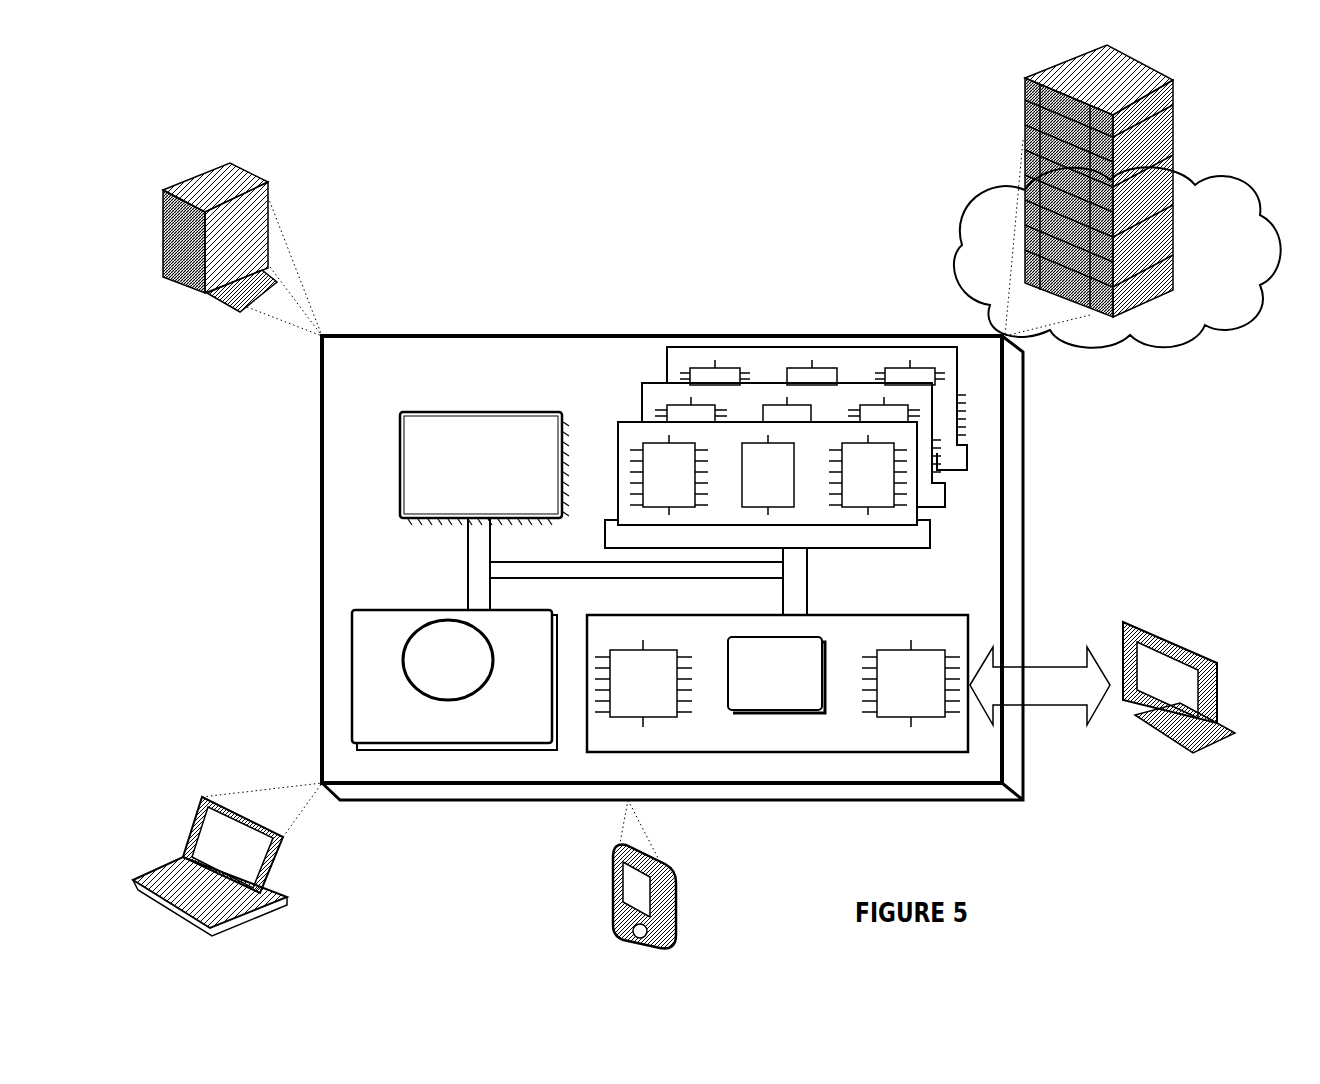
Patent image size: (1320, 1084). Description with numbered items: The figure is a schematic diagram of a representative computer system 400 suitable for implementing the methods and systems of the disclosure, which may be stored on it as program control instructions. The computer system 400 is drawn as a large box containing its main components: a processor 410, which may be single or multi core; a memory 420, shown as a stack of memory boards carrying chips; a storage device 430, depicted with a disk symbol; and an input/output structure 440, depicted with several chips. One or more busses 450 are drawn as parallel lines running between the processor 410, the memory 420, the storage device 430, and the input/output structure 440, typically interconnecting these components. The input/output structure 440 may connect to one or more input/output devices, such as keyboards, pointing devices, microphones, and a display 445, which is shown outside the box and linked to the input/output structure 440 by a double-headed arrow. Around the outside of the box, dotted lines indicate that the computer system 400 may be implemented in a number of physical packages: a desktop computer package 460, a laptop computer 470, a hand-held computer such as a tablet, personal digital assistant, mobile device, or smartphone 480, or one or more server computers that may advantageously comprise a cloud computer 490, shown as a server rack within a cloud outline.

The computer system 400 is at (593, 264).
The processor 410 is at (508, 412).
The memory 420 is at (780, 347).
The storage device 430 is at (380, 610).
The input/output structure 440 is at (888, 615).
The display 445 is at (1190, 637).
The bus 450 is at (807, 594).
The desktop computer package 460 is at (257, 177).
The laptop computer 470 is at (285, 893).
The smartphone 480 is at (676, 896).
The cloud computer 490 is at (962, 228).